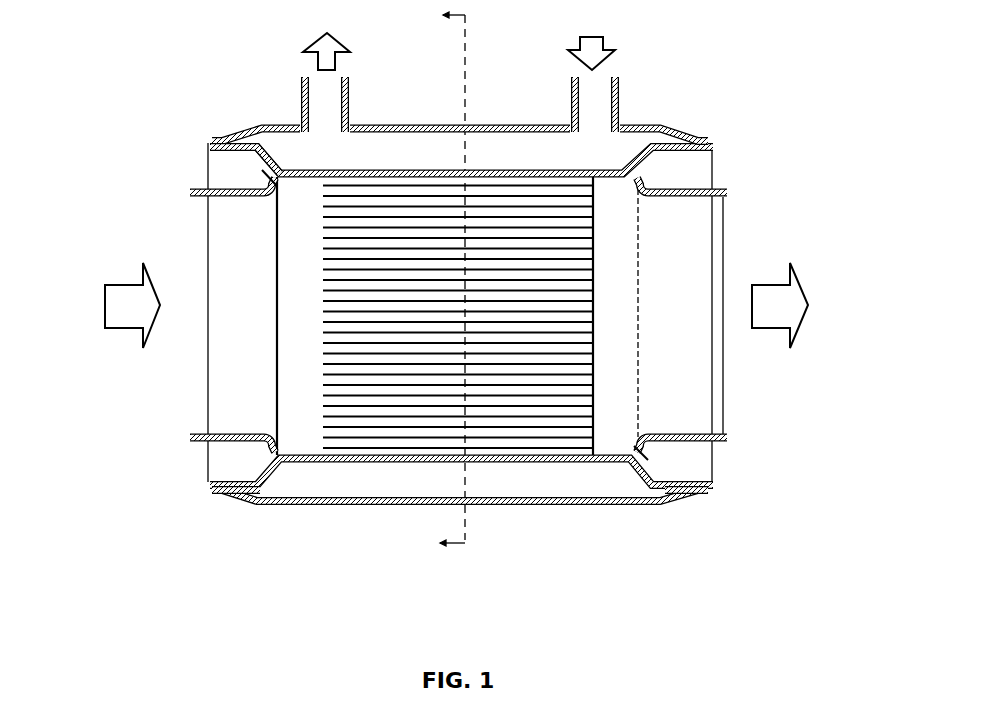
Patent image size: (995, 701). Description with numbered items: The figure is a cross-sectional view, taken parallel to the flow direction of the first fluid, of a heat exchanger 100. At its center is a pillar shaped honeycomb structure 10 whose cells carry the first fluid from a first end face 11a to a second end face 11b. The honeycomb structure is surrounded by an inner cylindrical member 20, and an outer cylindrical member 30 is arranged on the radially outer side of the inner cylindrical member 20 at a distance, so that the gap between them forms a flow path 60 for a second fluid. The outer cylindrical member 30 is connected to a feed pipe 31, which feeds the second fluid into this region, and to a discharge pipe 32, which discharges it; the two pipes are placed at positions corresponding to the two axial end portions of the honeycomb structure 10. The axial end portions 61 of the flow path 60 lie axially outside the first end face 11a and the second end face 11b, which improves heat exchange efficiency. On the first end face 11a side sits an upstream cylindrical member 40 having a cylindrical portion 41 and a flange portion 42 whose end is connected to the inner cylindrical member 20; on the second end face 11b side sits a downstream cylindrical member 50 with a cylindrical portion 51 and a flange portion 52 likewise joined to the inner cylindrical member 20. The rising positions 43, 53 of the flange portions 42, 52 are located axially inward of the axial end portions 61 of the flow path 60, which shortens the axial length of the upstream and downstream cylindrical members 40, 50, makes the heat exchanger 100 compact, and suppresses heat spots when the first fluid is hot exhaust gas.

The heat exchanger 100 is at (461, 315).
The pillar shaped honeycomb structure 10 is at (517, 423).
The first end face 11a is at (323, 355).
The second end face 11b is at (593, 277).
The inner cylindrical member 20 is at (412, 170).
The outer cylindrical member 30 is at (460, 95).
The feed pipe 31 is at (620, 103).
The discharge pipe 32 is at (302, 103).
The upstream cylindrical member 40 is at (160, 185).
The cylindrical portion 41 is at (230, 188).
The flange portion 42 is at (230, 163).
The rising position 43 is at (269, 198).
The downstream cylindrical member 50 is at (758, 451).
The cylindrical portion 51 is at (688, 446).
The flange portion 52 is at (658, 485).
The rising position 53 is at (643, 432).
The flow path for the second fluid 60 is at (360, 505).
The axial end portions of the flow path 61 is at (246, 488).